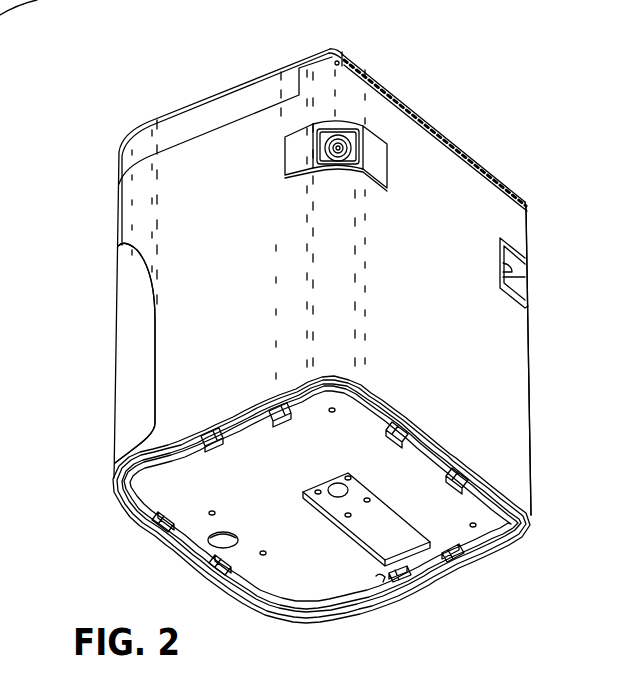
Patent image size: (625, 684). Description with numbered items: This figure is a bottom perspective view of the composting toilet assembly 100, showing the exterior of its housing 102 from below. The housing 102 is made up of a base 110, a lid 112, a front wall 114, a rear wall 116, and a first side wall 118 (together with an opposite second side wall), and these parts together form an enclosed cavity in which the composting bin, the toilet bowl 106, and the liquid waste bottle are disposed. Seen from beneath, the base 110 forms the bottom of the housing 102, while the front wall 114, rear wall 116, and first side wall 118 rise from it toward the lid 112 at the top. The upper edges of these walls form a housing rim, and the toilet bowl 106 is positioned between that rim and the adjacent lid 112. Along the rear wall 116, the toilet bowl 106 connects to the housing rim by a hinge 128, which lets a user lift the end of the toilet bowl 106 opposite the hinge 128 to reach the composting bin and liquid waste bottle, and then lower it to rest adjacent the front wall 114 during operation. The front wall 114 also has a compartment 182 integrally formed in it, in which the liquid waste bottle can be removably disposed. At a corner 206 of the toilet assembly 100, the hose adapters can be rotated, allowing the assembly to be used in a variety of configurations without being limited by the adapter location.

The composting toilet assembly 100 is at (466, 80).
The housing 102 is at (466, 184).
The toilet bowl 106 is at (230, 108).
The base 110 is at (313, 595).
The lid 112 is at (282, 70).
The front wall 114 is at (122, 350).
The rear wall 116 is at (520, 420).
The first side wall 118 is at (177, 195).
The hinge 128 is at (377, 76).
The compartment 182 is at (95, 353).
The corner 206 is at (377, 154).